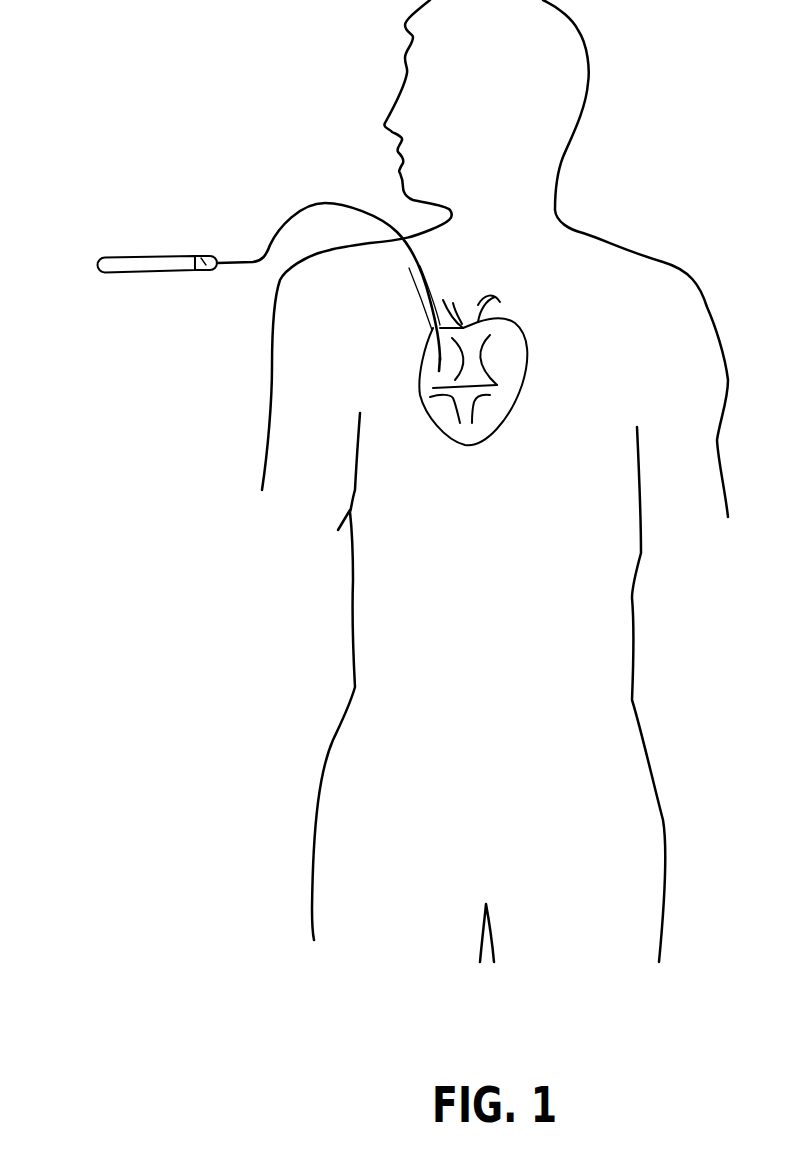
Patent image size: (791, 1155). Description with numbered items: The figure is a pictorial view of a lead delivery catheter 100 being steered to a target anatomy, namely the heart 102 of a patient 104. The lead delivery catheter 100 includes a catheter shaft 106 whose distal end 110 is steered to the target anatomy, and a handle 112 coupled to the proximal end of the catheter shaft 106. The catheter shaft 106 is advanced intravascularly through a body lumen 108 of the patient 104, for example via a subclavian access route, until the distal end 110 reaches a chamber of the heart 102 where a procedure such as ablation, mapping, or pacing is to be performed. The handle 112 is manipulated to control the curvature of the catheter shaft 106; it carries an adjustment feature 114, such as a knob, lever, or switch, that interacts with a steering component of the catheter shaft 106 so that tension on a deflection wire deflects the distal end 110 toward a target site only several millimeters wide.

The lead delivery catheter 100 is at (134, 267).
The heart 102 is at (543, 363).
The patient 104 is at (663, 262).
The catheter shaft 106 is at (302, 203).
The body lumen 108 is at (437, 268).
The distal end 110 is at (442, 368).
The handle 112 is at (123, 273).
The adjustment feature 114 is at (207, 267).